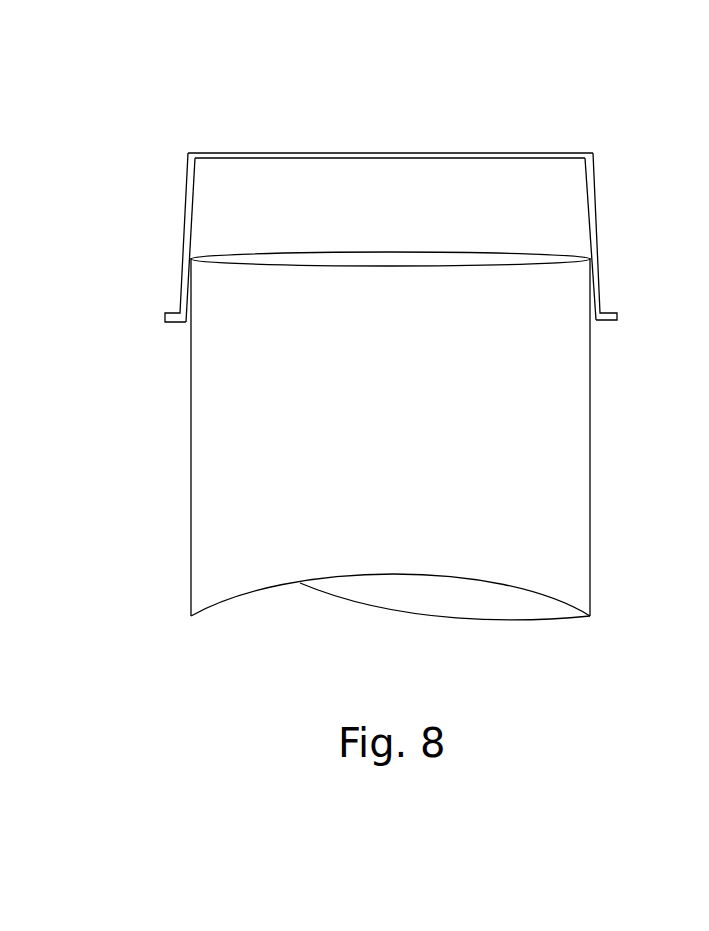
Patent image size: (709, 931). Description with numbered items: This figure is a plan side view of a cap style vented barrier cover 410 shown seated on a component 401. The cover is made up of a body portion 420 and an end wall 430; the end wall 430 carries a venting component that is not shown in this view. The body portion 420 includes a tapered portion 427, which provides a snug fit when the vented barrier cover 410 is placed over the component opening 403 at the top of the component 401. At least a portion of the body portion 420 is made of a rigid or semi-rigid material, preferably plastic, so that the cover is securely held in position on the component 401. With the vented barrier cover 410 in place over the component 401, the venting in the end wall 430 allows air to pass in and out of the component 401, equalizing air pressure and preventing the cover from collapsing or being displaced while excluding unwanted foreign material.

The component 401 is at (590, 477).
The component opening 403 is at (408, 260).
The vented barrier cover 410 is at (353, 178).
The body portion 420 is at (186, 205).
The tapered portion 427 is at (193, 218).
The end wall 430 is at (517, 152).